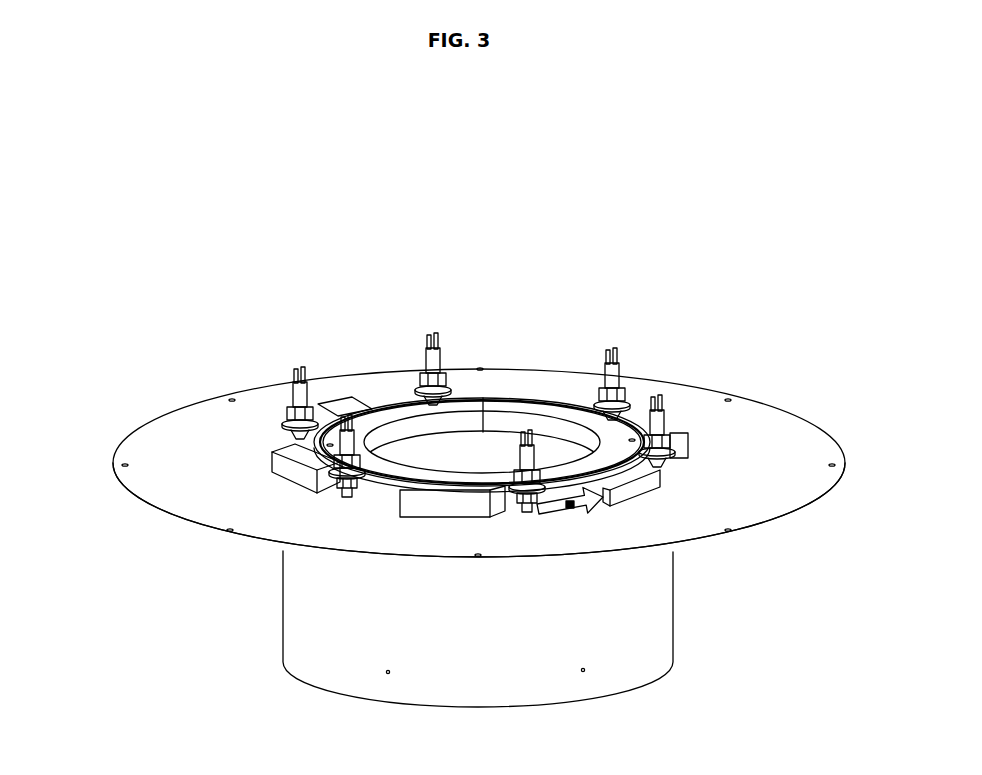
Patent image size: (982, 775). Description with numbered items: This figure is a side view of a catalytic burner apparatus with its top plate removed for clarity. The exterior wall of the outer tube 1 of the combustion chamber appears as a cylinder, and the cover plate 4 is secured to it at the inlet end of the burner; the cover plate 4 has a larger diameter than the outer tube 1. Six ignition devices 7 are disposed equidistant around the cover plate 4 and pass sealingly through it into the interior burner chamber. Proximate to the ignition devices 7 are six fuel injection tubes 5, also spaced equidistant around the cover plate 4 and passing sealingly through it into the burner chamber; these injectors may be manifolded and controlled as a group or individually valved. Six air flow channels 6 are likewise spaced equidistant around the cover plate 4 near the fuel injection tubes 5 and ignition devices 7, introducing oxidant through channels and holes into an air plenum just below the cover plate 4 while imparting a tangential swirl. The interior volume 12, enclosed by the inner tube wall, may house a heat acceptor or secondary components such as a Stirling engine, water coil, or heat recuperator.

The outer tube 1 is at (348, 652).
The cover plate 4 is at (748, 428).
The fuel injection tubes 5 is at (443, 340).
The air flow channels 6 is at (758, 647).
The ignition devices 7 is at (667, 385).
The interior volume 12 is at (410, 427).